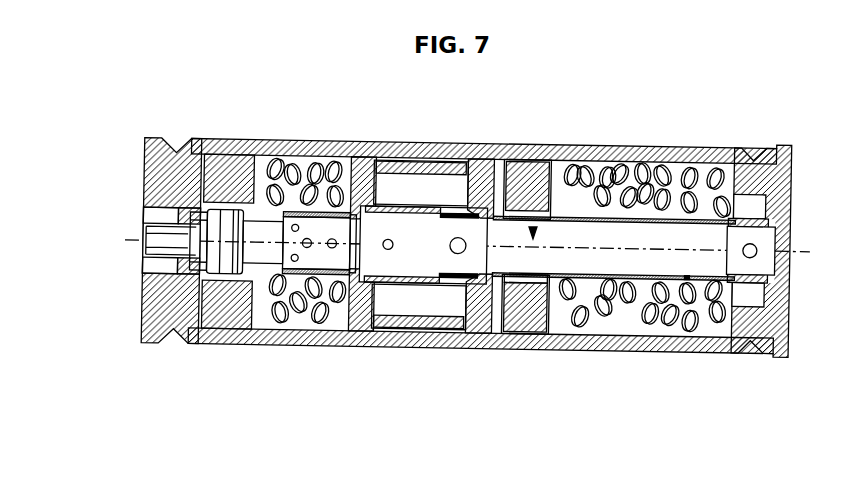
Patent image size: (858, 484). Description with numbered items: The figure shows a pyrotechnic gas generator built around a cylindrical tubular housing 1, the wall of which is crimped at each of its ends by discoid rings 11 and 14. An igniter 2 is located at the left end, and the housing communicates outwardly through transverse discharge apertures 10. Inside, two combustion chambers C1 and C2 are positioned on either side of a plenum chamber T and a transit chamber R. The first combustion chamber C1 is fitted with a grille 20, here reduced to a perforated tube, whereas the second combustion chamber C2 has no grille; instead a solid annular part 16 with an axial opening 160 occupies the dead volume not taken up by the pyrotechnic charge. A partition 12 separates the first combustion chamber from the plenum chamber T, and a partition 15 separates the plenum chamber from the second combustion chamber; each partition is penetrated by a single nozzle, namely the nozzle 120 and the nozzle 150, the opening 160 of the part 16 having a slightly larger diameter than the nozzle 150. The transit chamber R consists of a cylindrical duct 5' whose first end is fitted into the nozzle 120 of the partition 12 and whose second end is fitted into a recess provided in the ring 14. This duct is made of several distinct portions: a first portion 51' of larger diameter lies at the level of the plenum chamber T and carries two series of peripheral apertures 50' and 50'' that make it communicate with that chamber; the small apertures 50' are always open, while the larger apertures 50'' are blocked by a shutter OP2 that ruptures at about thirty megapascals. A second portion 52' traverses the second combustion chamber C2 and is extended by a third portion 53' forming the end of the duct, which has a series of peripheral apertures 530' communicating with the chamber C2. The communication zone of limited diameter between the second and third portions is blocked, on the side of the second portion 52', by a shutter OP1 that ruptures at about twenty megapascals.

The tubular housing 1 is at (373, 387).
The igniter 2 is at (238, 230).
The cylindrical duct 5' is at (519, 220).
The discharge apertures 10 is at (418, 140).
The discoid ring 11 is at (160, 303).
The partition 12 is at (350, 335).
The discoid ring 14 is at (780, 323).
The partition 15 is at (522, 318).
The solid annular part 16 is at (522, 288).
The grille 20 is at (293, 203).
The peripheral apertures 50' is at (421, 164).
The peripheral apertures 50'' is at (445, 343).
The first portion 51' is at (404, 315).
The second portion 52' is at (613, 332).
The third portion 53' is at (790, 237).
The nozzle 120 is at (340, 197).
The nozzle 150 is at (517, 207).
The axial opening 160 is at (538, 292).
The peripheral apertures 530' is at (791, 250).
The first combustion chamber C1 is at (303, 317).
The second combustion chamber C2 is at (628, 323).
The shutter OP1 is at (687, 268).
The shutter OP2 is at (424, 272).
The transit chamber R is at (533, 230).
The plenum chamber T is at (437, 306).